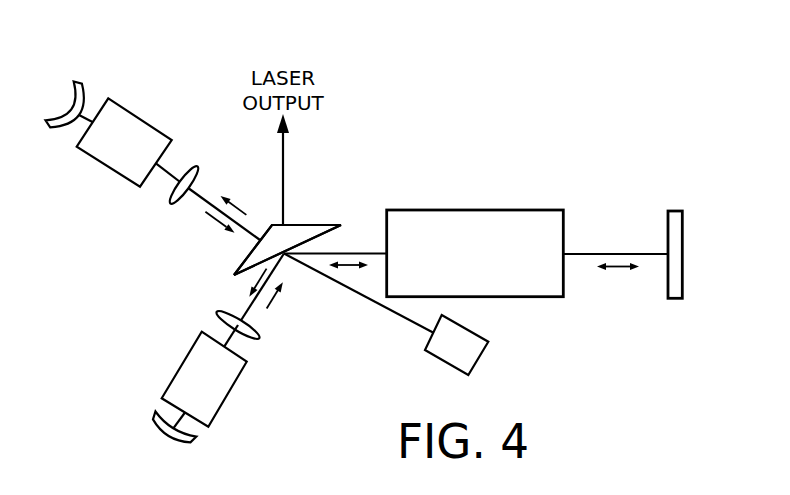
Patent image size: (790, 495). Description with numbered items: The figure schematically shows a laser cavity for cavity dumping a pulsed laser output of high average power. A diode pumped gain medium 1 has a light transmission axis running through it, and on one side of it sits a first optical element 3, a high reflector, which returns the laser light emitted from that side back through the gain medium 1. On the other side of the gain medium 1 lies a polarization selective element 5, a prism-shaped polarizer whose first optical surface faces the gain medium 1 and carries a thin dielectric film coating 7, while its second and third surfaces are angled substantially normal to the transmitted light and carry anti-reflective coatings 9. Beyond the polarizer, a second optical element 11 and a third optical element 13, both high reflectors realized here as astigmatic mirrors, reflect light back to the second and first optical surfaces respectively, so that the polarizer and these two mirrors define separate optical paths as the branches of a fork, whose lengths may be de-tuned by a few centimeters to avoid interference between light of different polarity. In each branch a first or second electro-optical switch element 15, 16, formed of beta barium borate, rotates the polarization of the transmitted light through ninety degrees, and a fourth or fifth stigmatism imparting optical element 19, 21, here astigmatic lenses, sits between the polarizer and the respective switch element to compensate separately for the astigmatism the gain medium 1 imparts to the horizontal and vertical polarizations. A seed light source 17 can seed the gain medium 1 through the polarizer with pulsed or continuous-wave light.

The gain medium 1 is at (474, 209).
The first optical element 3 is at (675, 210).
The polarization selective element 5 is at (297, 233).
The thin dielectric film coating 7 is at (284, 270).
The anti-reflective coatings 9 is at (272, 224).
The second optical element 11 is at (82, 83).
The third optical element 13 is at (152, 411).
The first electro-optical switch element 15 is at (112, 173).
The second electro-optical switch element 16 is at (186, 370).
The seed light source 17 is at (473, 352).
The fourth stigmatism imparting optical element 19 is at (194, 163).
The fifth stigmatism imparting optical element 21 is at (216, 312).